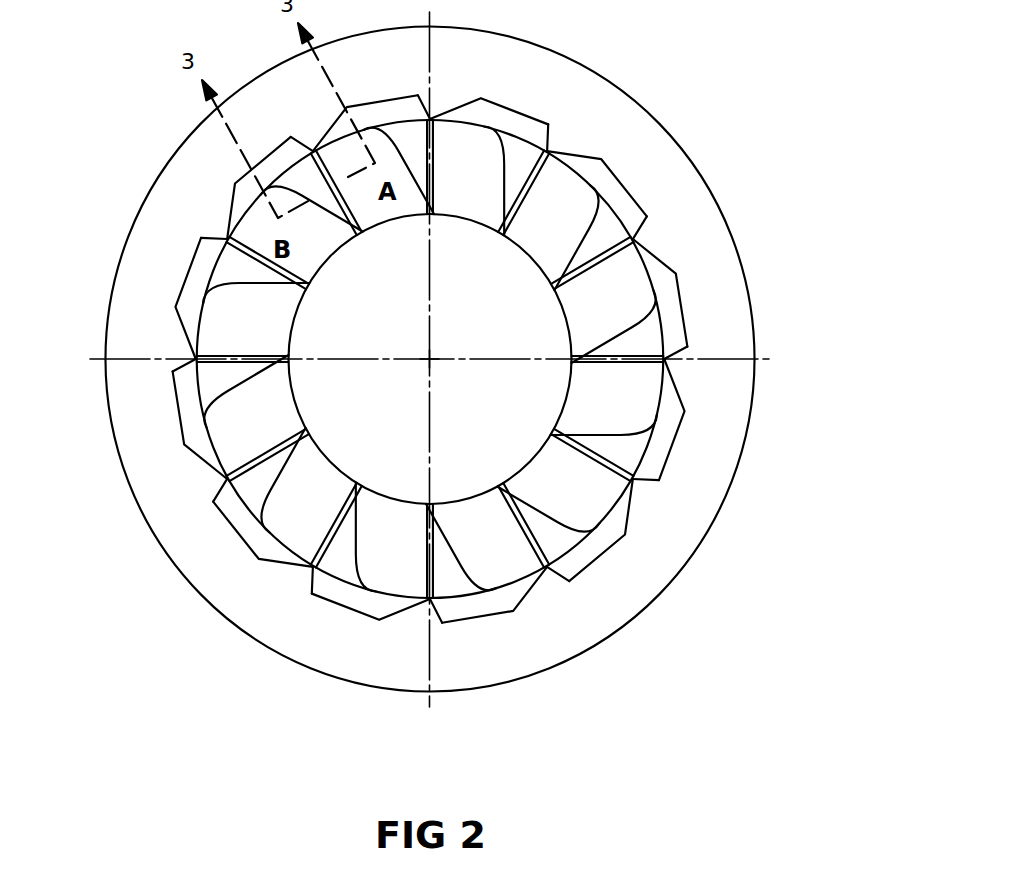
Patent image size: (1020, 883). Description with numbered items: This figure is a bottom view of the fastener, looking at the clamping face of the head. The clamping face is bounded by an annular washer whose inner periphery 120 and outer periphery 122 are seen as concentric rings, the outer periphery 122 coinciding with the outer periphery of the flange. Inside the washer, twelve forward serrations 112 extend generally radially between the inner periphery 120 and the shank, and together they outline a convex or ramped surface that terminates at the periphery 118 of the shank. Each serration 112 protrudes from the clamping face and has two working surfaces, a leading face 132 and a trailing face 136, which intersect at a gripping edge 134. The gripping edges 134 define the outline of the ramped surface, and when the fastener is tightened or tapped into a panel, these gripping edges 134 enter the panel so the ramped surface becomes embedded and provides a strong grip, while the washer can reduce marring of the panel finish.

The serrations 112 is at (507, 553).
The periphery of the shank 118 is at (572, 385).
The inner periphery 120 is at (352, 590).
The outer periphery 122 is at (697, 548).
The leading face 132 is at (297, 527).
The gripping edge 134 is at (227, 363).
The trailing face 136 is at (297, 523).